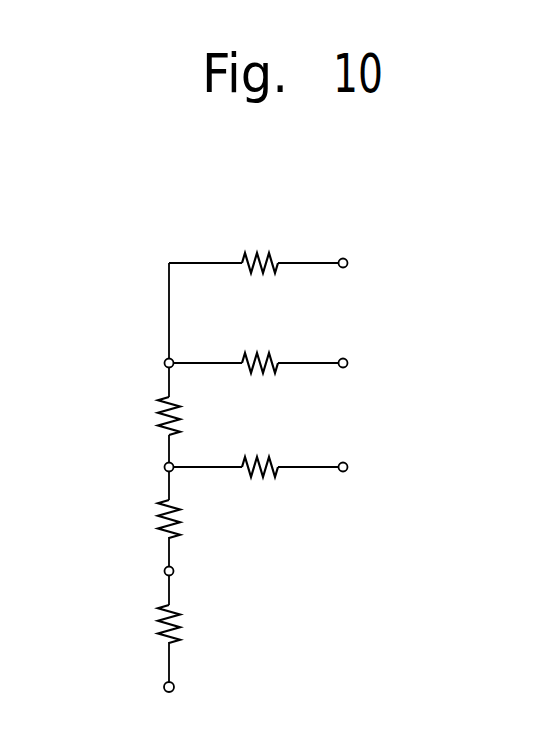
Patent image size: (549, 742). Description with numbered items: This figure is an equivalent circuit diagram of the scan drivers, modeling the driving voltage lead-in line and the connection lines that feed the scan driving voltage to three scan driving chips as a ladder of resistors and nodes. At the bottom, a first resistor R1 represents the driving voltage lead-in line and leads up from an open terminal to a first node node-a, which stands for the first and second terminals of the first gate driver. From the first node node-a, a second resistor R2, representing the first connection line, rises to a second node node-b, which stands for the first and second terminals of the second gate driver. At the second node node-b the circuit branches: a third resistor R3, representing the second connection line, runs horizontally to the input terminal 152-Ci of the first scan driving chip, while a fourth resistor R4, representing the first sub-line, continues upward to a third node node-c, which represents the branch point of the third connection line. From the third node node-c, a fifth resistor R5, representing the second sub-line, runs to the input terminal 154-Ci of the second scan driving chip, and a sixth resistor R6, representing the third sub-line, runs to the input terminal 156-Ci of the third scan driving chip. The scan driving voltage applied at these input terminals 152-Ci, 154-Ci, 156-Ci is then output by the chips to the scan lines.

The first resistor R1 is at (185, 624).
The second resistor R2 is at (186, 519).
The third resistor R3 is at (260, 483).
The fourth resistor R4 is at (186, 416).
The fifth resistor R5 is at (260, 379).
The sixth resistor R6 is at (260, 279).
The input terminal of first scan driving chip 152-Ci is at (348, 467).
The input terminal of second scan driving chip 154-Ci is at (348, 363).
The input terminal of third scan driving chip 156-Ci is at (348, 263).
The first node node-a is at (164, 571).
The second node node-b is at (164, 467).
The third node node-c is at (164, 363).